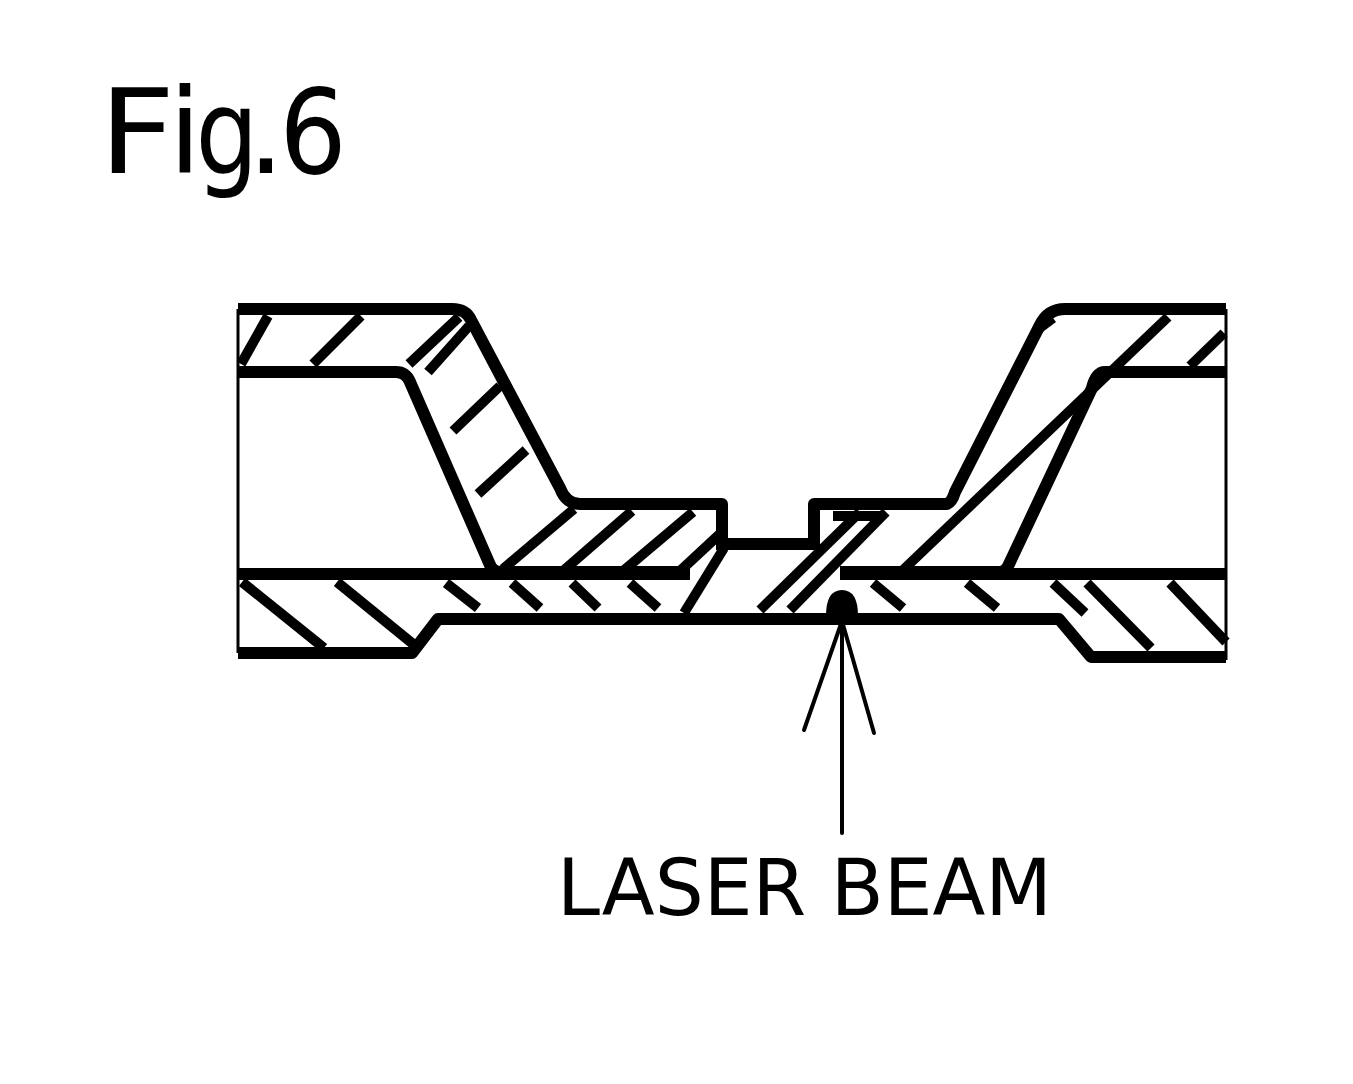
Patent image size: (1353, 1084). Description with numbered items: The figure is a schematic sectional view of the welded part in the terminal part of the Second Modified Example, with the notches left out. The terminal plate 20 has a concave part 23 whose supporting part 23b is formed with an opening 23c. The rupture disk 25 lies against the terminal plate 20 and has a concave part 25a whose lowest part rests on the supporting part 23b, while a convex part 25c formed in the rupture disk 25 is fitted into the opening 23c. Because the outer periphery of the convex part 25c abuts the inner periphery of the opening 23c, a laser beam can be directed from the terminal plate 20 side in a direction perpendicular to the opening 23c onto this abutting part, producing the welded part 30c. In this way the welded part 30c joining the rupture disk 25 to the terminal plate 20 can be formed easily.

The terminal plate 20 is at (232, 659).
The concave part 23 is at (337, 633).
The supporting part 23b is at (508, 595).
The opening 23c is at (698, 623).
The rupture disk 25 is at (1226, 303).
The concave part 25a is at (619, 522).
The convex part 25c is at (776, 566).
The welded part 30c is at (850, 621).